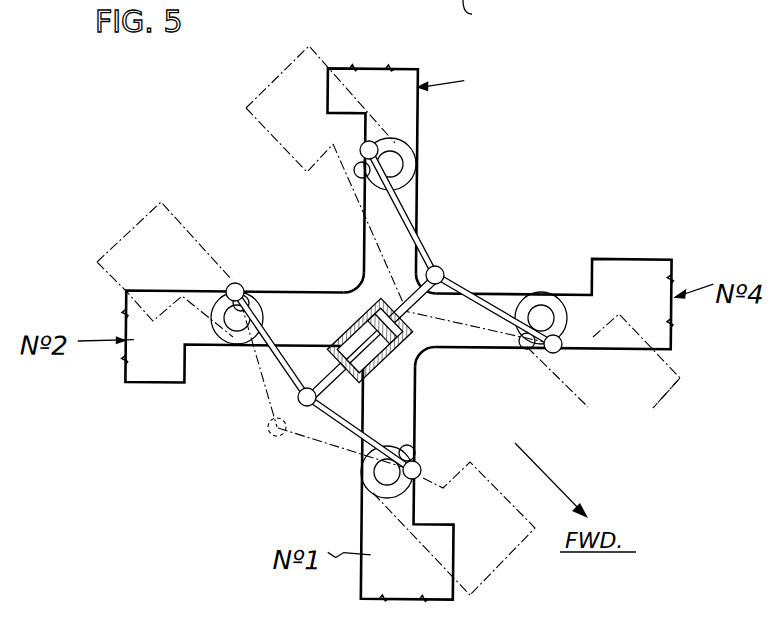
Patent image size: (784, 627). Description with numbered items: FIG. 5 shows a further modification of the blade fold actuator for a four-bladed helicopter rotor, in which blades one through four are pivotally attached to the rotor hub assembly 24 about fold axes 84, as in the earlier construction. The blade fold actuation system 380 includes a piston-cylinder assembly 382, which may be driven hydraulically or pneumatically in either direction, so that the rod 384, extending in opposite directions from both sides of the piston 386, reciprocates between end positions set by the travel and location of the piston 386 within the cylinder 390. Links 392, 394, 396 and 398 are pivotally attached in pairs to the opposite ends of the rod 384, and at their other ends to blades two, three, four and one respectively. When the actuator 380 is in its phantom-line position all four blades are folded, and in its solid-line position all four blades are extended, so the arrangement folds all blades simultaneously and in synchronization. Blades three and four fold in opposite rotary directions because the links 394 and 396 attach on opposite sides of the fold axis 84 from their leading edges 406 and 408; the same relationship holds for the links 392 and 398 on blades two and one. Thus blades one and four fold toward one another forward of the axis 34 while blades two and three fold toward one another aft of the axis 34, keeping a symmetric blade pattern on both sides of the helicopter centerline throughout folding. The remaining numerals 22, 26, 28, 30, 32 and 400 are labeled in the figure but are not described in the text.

The vehicle frame 22 is at (548, 158).
The rotor hub assembly 24 is at (276, 298).
The beam No. 1 phantom position 26 is at (518, 546).
The beam No. 2 phantom position 28 is at (118, 272).
The beam No. 3 30 is at (412, 117).
The beam No. 4 phantom position 32 is at (668, 407).
The axis 34 is at (413, 320).
The fold axes 84 is at (391, 165).
The blade fold actuation system 380 is at (397, 358).
The piston-cylinder assembly 382 is at (399, 358).
The rod 384 is at (399, 358).
The piston 386 is at (399, 337).
The cylinder 390 is at (397, 347).
The link 392 is at (288, 370).
The link 394 is at (392, 199).
The link 396 is at (463, 291).
The link 398 is at (348, 427).
The frame 400 is at (472, 14).
The blade leading edge 406 is at (317, 55).
The blade leading edge 408 is at (646, 353).